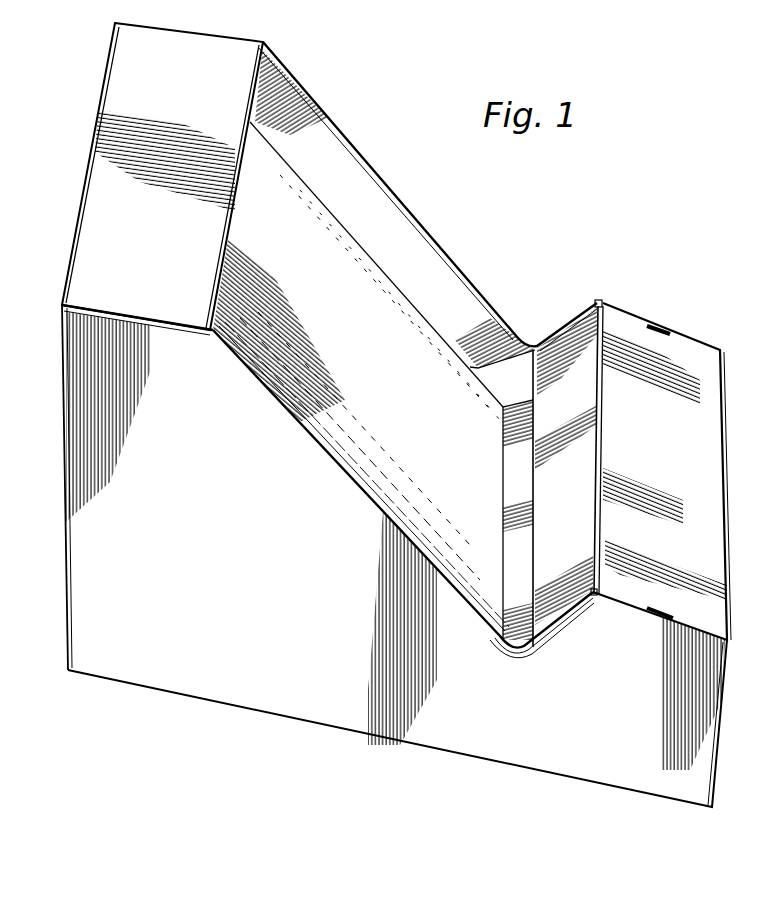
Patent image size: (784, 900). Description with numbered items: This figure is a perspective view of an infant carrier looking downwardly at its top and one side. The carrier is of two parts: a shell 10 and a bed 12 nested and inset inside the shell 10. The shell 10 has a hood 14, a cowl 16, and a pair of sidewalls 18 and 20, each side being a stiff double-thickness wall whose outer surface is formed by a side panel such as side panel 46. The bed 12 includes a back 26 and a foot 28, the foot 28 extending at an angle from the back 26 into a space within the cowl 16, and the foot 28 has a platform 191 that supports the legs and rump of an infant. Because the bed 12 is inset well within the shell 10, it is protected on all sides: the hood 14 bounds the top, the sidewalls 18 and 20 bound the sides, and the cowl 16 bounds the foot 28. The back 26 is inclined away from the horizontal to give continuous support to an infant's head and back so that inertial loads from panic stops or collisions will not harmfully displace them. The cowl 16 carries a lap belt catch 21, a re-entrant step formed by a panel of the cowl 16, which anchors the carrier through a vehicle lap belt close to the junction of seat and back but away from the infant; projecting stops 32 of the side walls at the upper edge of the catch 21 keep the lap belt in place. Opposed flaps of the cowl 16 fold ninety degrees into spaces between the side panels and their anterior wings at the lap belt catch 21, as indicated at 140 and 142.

The shell 10 is at (444, 216).
The bed 12 is at (385, 330).
The hood 14 is at (262, 30).
The cowl 16 is at (697, 357).
The left side / sidewall 18 is at (98, 475).
The right side / sidewall 20 is at (368, 188).
The lap belt catch 21 is at (563, 345).
The back 26 is at (417, 423).
The foot 28 is at (518, 489).
The projecting stops 32 is at (604, 302).
The side panel 46 is at (155, 667).
The cowl flap fitting location 140 is at (576, 310).
The cowl flap fitting location 142 is at (548, 630).
The platform 191 is at (518, 558).